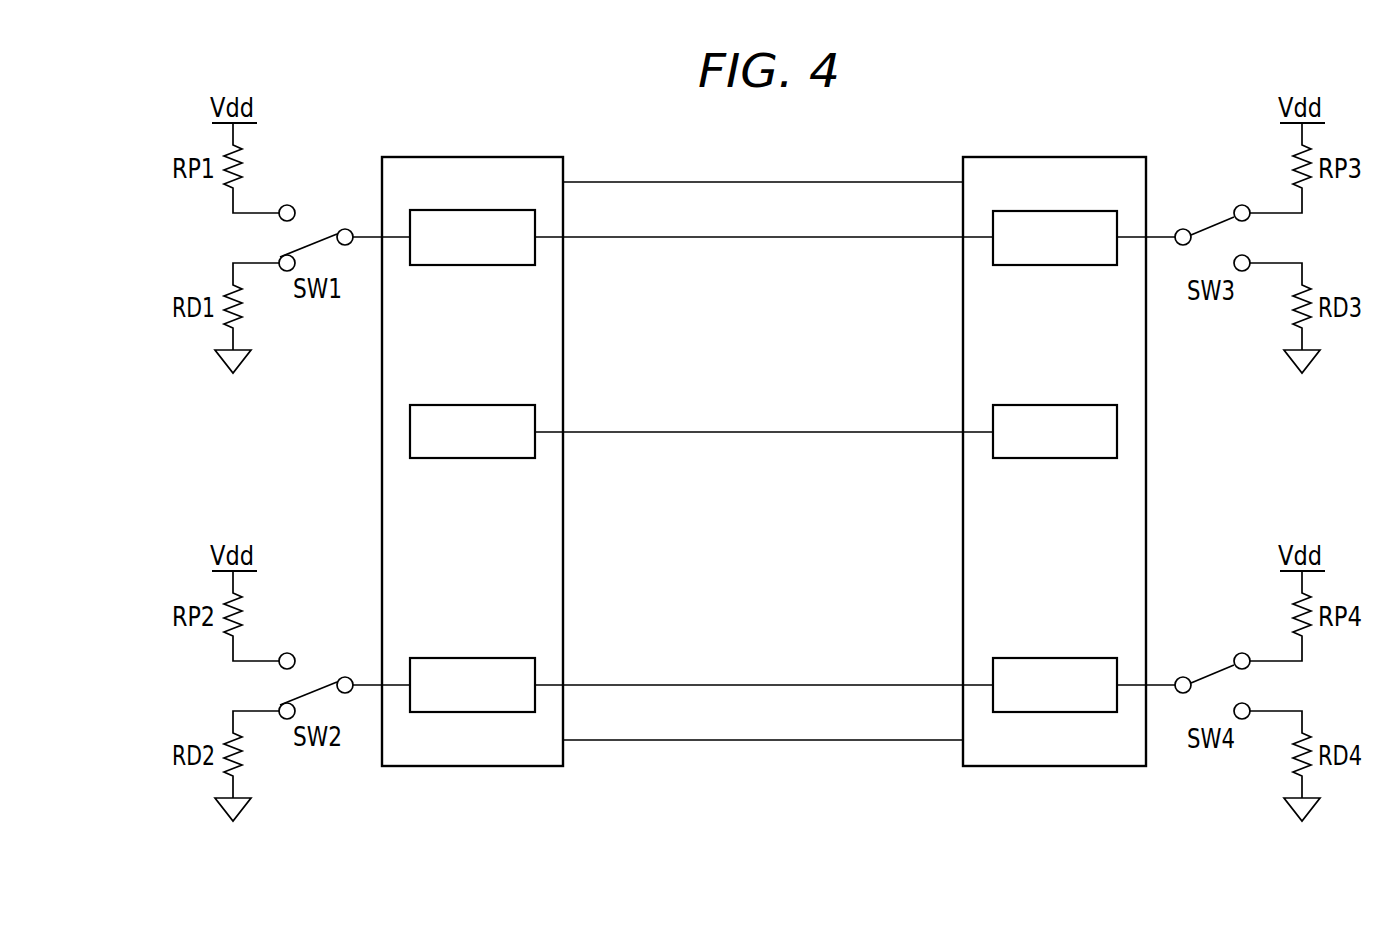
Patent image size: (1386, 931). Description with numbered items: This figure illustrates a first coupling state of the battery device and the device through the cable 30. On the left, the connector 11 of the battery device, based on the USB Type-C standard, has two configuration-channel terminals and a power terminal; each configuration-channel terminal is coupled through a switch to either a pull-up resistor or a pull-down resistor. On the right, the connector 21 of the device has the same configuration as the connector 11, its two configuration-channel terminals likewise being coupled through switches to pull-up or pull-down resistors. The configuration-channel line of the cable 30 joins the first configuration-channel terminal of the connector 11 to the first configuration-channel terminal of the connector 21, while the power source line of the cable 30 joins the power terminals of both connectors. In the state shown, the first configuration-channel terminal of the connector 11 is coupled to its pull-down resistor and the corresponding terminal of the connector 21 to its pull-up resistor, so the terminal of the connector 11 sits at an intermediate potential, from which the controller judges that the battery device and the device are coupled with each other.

The connector 11 is at (470, 157).
The connector 21 is at (1050, 157).
The cable 30 is at (745, 182).